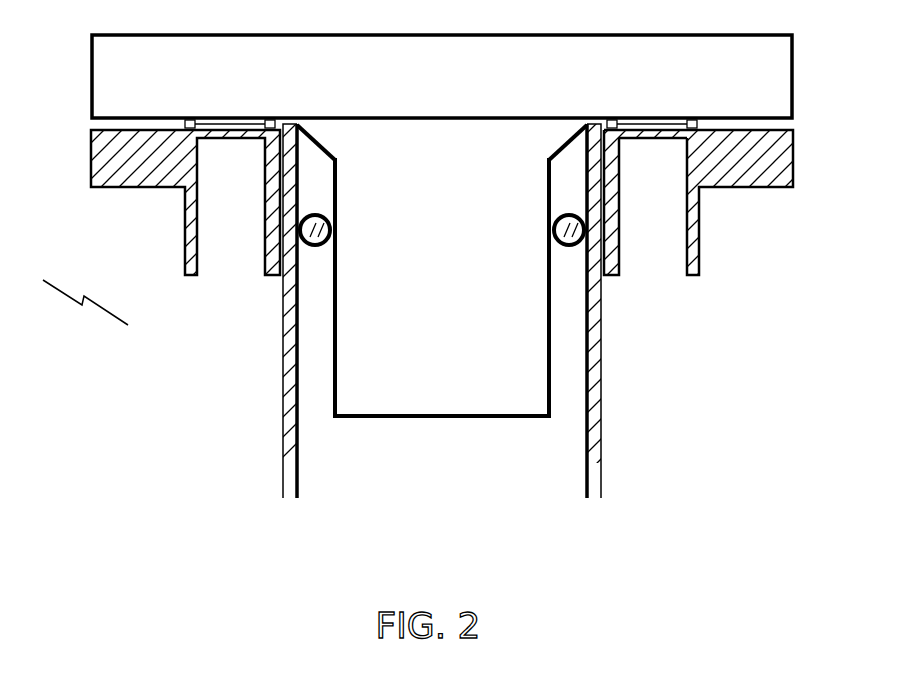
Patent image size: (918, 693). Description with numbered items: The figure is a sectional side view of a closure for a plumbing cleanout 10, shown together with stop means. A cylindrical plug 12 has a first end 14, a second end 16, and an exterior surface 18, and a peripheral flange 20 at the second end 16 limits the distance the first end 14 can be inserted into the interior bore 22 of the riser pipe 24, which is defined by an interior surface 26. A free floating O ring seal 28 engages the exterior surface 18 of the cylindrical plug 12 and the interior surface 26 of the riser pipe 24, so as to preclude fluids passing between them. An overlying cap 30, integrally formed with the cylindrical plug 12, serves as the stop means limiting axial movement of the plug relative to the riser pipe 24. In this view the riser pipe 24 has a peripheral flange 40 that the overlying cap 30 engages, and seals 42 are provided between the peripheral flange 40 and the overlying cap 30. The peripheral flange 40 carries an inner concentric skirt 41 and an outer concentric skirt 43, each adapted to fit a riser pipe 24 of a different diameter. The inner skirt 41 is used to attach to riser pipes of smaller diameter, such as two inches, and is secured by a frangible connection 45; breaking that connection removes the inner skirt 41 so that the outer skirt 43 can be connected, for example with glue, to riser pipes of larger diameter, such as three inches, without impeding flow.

The plumbing cleanout 10 is at (69, 295).
The cylindrical plug 12 is at (400, 264).
The first end 14 is at (430, 418).
The second end 16 is at (342, 136).
The exterior surface 18 is at (333, 372).
The peripheral flange 20 is at (557, 132).
The interior bore 22 is at (332, 480).
The riser pipe 24 is at (597, 311).
The interior surface 26 is at (587, 468).
The O ring seal 28 is at (552, 227).
The overlying cap 30 is at (770, 87).
The peripheral flange 40 is at (107, 165).
The inner concentric skirt 41 is at (623, 277).
The seals 42 is at (597, 118).
The outer concentric skirt 43 is at (705, 278).
The frangible connection 45 is at (678, 140).